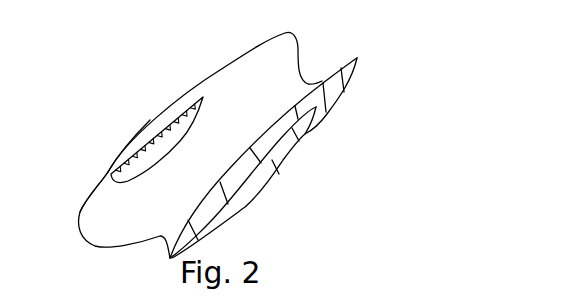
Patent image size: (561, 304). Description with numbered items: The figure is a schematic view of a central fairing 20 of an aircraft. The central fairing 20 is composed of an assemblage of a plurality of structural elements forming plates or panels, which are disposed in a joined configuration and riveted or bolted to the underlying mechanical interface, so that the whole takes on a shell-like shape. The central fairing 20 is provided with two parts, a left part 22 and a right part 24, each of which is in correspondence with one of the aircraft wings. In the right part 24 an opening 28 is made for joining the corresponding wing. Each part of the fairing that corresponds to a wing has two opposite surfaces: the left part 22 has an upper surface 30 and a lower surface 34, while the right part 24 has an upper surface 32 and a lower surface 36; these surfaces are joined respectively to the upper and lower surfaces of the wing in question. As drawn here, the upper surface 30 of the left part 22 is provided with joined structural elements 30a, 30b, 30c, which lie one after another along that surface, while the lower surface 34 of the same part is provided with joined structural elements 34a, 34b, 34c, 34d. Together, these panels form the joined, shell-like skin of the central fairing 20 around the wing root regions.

The central fairing 20 is at (249, 132).
The left part 22 is at (225, 144).
The right part 24 is at (159, 106).
The opening 28 is at (117, 178).
The upper surface 30 is at (263, 158).
The joined structural element 30a is at (244, 166).
The joined structural element 30b is at (278, 136).
The joined structural element 30c is at (302, 102).
The upper surface 32 is at (119, 135).
The lower surface 34 is at (285, 158).
The joined structural element 34a is at (246, 205).
The joined structural element 34b is at (279, 178).
The joined structural element 34c is at (305, 147).
The joined structural element 34d is at (322, 123).
The lower surface 36 is at (165, 137).